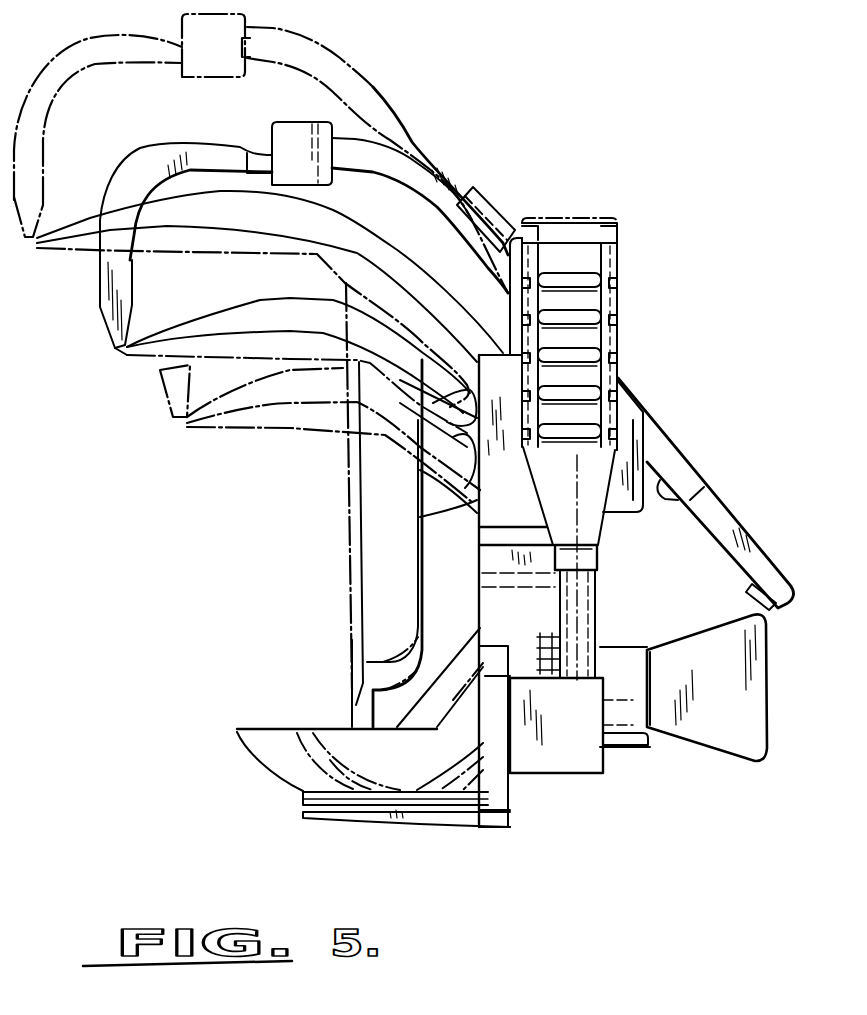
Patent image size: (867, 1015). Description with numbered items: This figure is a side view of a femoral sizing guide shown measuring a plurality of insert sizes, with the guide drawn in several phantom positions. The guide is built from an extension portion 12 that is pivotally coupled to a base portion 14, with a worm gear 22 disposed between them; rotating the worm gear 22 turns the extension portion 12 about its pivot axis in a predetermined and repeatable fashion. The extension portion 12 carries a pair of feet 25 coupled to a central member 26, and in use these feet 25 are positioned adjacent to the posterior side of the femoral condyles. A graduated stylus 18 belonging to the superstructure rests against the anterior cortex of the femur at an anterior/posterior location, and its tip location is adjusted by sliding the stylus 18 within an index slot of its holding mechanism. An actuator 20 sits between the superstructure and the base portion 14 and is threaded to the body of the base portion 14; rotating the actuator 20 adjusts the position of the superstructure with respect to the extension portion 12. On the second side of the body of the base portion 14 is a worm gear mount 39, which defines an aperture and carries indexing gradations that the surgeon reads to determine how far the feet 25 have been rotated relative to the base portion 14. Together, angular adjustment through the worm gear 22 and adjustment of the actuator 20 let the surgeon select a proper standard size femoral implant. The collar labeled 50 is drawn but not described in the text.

The extension portion 12 is at (503, 812).
The base portion 14 is at (527, 612).
The graduated stylus 18 is at (375, 85).
The actuator 20 is at (613, 333).
The worm gear 22 is at (633, 733).
The feet 25 is at (303, 796).
The central member 26 is at (503, 793).
The worm gear mount 39 is at (622, 668).
The collar 50 is at (583, 560).